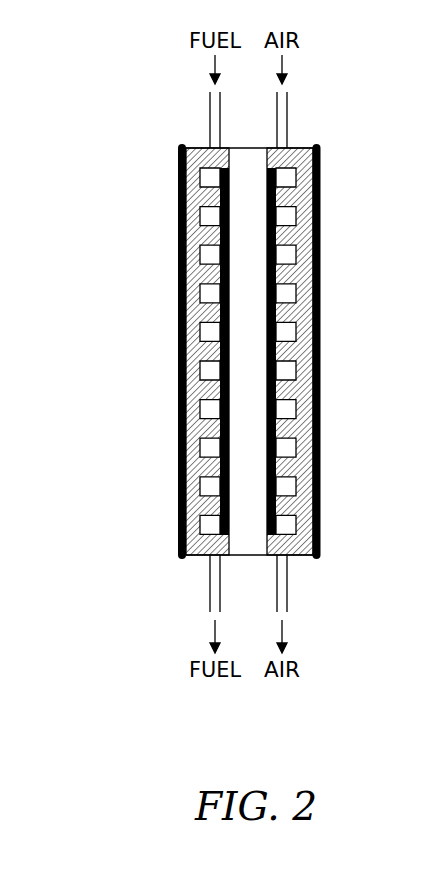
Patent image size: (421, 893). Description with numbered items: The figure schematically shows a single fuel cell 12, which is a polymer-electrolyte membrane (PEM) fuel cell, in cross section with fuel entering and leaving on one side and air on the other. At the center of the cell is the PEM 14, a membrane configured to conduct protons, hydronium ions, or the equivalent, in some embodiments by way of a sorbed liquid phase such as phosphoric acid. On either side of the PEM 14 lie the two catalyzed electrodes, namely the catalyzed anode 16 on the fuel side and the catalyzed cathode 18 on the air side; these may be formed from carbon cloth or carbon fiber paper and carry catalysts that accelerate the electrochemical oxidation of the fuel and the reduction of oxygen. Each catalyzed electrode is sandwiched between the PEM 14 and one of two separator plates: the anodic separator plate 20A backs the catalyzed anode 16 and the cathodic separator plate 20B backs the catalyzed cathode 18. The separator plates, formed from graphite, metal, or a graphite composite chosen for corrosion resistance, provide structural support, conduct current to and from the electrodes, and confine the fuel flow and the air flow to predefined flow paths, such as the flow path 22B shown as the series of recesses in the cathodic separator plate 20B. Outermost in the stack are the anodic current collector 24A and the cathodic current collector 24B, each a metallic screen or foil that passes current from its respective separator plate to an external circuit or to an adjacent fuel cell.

The fuel cell 12 is at (216, 350).
The PEM 14 is at (240, 270).
The catalyzed anode 16 is at (222, 372).
The catalyzed cathode 18 is at (275, 372).
The anodic separator plate 20A is at (196, 147).
The cathodic separator plate 20B is at (302, 147).
The flow path 22B is at (287, 330).
The anodic current collector 24A is at (180, 227).
The cathodic current collector 24B is at (318, 227).